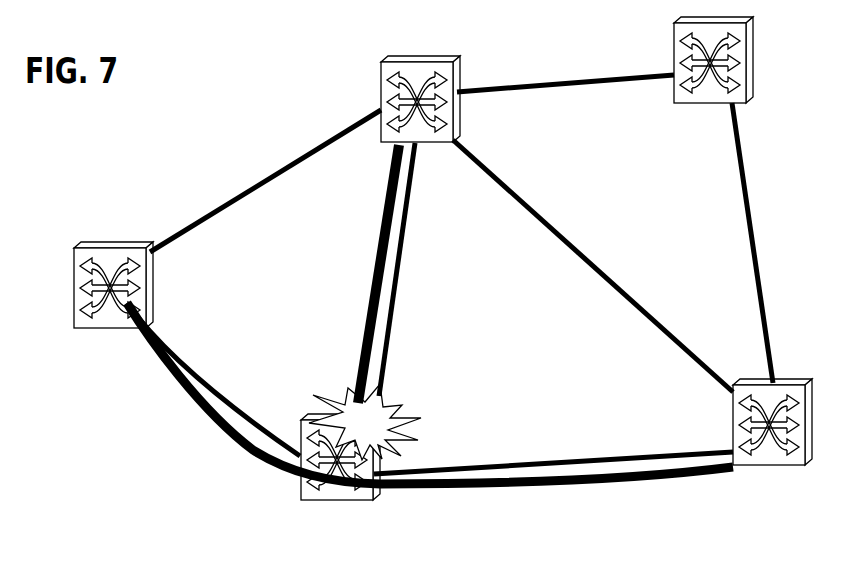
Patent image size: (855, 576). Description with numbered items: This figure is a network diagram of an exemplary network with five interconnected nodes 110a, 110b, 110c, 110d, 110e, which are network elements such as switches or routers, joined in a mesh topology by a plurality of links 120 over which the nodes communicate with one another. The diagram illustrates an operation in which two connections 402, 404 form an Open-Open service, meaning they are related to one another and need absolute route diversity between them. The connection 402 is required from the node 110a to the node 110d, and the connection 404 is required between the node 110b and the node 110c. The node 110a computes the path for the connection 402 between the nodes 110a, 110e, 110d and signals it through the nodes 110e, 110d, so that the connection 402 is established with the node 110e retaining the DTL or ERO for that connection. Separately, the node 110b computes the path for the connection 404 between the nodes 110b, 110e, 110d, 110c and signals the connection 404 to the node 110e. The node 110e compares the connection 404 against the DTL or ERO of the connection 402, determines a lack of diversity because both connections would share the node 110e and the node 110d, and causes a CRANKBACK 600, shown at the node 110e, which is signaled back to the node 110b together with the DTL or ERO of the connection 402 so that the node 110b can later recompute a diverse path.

The node 110a is at (78, 330).
The node 110b is at (447, 57).
The node 110c is at (710, 103).
The node 110d is at (760, 468).
The node 110e is at (320, 500).
The links 120 is at (250, 192).
The connection 402 is at (257, 457).
The connection 404 is at (373, 262).
The CRANKBACK 600 is at (405, 400).